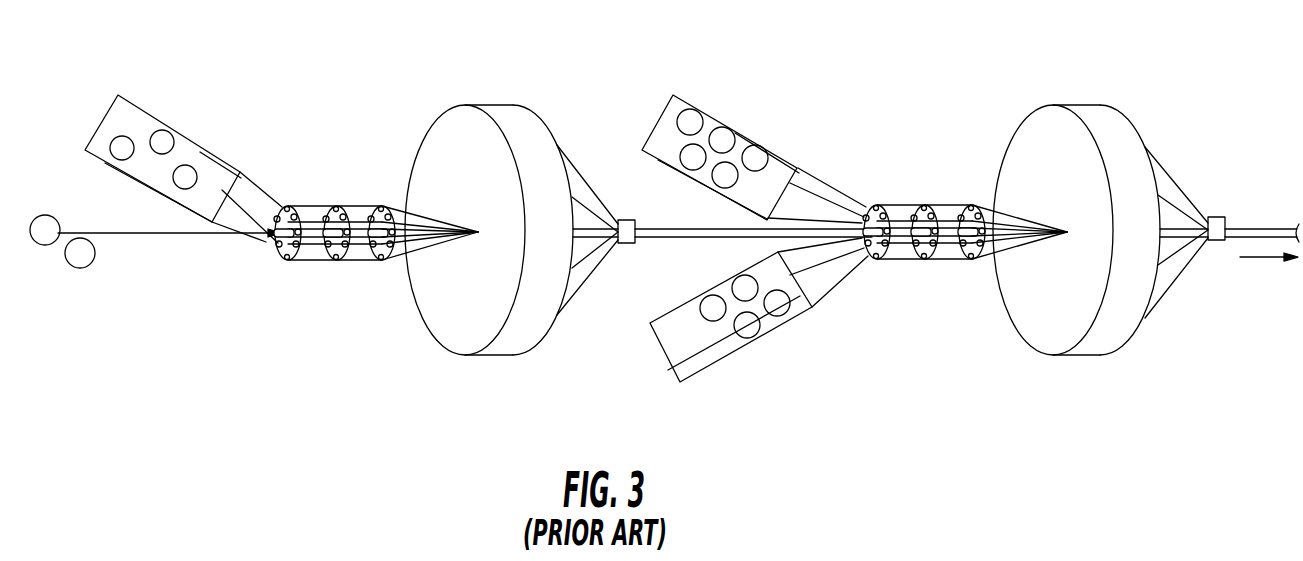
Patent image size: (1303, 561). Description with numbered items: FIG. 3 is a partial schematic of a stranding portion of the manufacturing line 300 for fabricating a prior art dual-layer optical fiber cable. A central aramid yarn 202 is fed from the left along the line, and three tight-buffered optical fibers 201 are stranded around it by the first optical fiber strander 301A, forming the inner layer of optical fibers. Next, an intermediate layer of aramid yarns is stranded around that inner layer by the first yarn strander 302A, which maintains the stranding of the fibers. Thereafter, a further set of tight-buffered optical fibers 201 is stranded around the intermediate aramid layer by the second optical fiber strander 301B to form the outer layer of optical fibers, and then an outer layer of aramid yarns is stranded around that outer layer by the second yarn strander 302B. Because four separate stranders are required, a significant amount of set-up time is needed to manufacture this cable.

The prior art fiber processing system 300 is at (385, 99).
The tight-buffered optical fibers 201 is at (250, 190).
The central aramid yarn 202 is at (155, 240).
The first optical fiber strander 301A is at (326, 268).
The first yarn strander 302A is at (451, 334).
The second optical fiber strander 301B is at (904, 277).
The second yarn strander 302B is at (1064, 356).